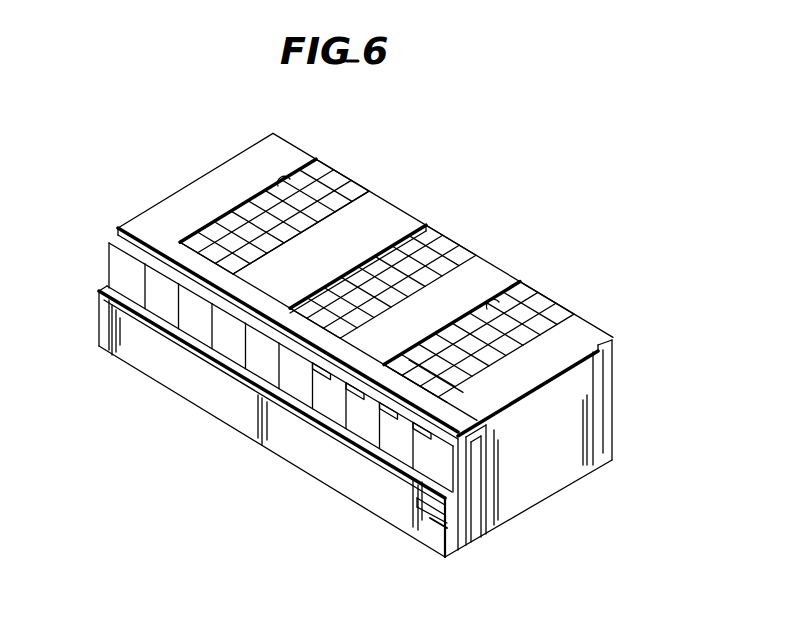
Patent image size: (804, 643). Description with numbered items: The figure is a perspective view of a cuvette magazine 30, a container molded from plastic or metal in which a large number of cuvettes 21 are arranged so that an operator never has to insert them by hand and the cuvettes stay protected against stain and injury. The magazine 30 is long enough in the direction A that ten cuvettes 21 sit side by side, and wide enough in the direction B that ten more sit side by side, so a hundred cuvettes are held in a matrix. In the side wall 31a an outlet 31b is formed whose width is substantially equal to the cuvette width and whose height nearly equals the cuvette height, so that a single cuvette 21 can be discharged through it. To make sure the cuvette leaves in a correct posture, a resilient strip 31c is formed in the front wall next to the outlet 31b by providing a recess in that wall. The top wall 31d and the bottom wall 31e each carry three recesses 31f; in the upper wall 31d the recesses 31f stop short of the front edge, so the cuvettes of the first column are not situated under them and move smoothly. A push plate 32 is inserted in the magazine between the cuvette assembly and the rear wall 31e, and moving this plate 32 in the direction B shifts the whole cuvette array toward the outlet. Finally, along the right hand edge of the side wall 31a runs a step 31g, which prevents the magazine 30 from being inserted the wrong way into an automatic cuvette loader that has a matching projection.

The magazine 30 is at (184, 180).
The cuvette 21 is at (393, 423).
The side wall 31a is at (555, 472).
The outlet 31b is at (463, 533).
The resilient strip 31c is at (430, 504).
The top wall 31d is at (396, 222).
The bottom wall 31e is at (425, 230).
The recess 31f is at (289, 185).
The step 31g is at (612, 377).
The push plate 32 is at (540, 313).
The direction A is at (418, 450).
The direction B is at (390, 271).